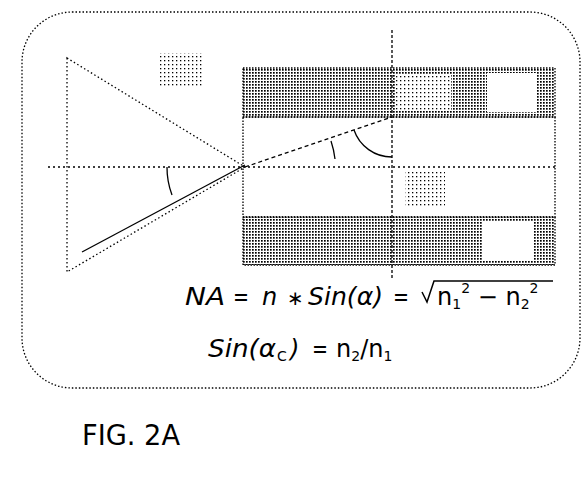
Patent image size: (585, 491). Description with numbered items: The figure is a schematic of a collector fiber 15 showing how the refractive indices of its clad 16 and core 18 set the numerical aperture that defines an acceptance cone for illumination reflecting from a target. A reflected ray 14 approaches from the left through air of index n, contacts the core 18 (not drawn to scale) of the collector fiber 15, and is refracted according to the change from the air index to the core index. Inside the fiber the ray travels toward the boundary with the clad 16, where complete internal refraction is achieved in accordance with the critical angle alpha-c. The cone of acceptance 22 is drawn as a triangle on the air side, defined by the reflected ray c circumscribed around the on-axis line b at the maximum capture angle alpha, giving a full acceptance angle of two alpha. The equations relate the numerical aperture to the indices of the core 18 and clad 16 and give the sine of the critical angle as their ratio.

The reflected ray 14 is at (135, 228).
The collector fiber 15 is at (462, 62).
The clad 16 is at (523, 105).
The core 18 is at (520, 157).
The cone of acceptance 22 is at (107, 119).